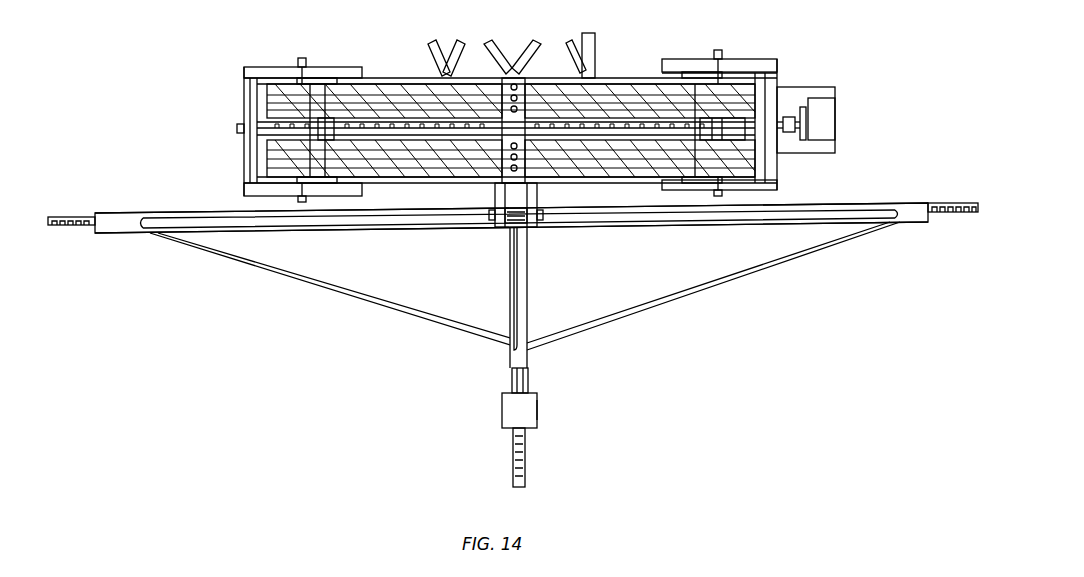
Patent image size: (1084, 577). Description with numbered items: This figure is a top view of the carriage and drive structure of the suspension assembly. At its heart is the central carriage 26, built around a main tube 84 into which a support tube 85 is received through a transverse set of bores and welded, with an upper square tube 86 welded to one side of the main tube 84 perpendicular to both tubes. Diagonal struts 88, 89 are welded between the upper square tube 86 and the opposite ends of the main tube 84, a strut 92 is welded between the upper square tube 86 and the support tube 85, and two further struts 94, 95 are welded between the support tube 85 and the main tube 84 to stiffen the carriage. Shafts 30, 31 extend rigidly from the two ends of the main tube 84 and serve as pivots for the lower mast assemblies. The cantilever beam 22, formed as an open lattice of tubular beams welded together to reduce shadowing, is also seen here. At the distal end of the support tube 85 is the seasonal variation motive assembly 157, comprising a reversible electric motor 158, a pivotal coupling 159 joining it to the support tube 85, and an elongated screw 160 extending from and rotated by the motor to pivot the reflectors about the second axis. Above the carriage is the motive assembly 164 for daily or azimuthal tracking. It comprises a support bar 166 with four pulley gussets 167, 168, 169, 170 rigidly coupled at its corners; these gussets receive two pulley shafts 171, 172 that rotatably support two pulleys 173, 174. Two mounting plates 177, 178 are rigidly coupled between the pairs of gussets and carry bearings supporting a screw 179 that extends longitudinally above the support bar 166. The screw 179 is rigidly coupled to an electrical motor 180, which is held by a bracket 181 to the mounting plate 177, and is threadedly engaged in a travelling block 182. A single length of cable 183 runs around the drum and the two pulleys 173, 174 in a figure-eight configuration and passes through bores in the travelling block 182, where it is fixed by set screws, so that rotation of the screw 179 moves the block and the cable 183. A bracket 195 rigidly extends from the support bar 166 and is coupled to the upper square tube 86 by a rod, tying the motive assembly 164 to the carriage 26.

The cantilever beam 22 is at (596, 56).
The central carriage 26 is at (712, 228).
The shaft 30 is at (64, 217).
The shaft 31 is at (952, 203).
The main tube 84 is at (614, 230).
The support tube 85 is at (527, 316).
The upper square tube 86 is at (496, 228).
The diagonal strut 88 is at (418, 226).
The diagonal strut 89 is at (785, 228).
The strut 92 is at (522, 296).
The strut 94 is at (726, 298).
The strut 95 is at (400, 312).
The seasonal variation motive assembly 157 is at (545, 412).
The reversible electric motor 158 is at (502, 410).
The threaded stem 159 is at (532, 382).
The elongated screw 160 is at (525, 468).
The motive assembly 164 is at (709, 52).
The support bar 166 is at (380, 66).
The pulley gusset 167 is at (762, 190).
The pulley gusset 168 is at (762, 59).
The pulley gusset 169 is at (244, 196).
The pulley gusset 170 is at (262, 67).
The pulley shaft 171 is at (722, 50).
The pulley shaft 172 is at (304, 58).
The pulley 173 is at (770, 80).
The pulley 174 is at (315, 78).
The mounting plate 177 is at (770, 176).
The mounting plate 178 is at (244, 90).
The screw 179 is at (237, 129).
The electrical motor 180 is at (835, 132).
The bracket 181 is at (833, 87).
The travelling block 182 is at (525, 78).
The cable 183 is at (418, 84).
The bracket 195 is at (541, 192).